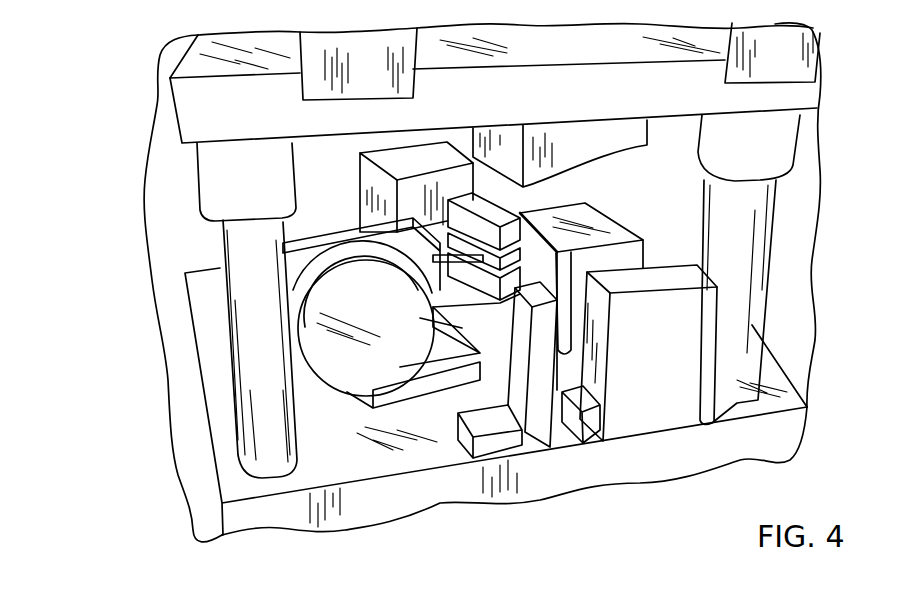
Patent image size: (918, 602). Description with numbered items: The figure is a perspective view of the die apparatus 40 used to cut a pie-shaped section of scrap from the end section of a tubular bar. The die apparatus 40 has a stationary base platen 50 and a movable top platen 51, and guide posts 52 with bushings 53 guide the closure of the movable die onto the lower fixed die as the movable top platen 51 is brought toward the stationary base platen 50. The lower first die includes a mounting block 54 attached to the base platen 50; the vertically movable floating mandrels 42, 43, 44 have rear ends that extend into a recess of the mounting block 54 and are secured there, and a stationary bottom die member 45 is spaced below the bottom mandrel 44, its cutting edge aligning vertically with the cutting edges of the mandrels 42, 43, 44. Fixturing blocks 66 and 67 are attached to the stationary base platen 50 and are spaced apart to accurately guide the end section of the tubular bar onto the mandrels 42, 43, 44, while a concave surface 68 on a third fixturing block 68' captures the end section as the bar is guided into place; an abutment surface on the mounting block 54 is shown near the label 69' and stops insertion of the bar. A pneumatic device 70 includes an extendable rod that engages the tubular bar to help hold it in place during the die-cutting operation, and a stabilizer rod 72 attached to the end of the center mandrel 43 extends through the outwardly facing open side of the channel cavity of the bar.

The die apparatus 40 is at (132, 272).
The mandrel 42 is at (478, 195).
The center mandrel 43 is at (383, 230).
The bottom mandrel 44 is at (440, 262).
The stationary bottom die member 45 is at (445, 300).
The stationary base platen 50 is at (228, 483).
The movable top platen 51 is at (182, 106).
The guide post 52 is at (230, 352).
The bushing 53 is at (207, 175).
The mounting block 54 is at (451, 147).
The fixturing block 66 is at (653, 413).
The fixturing block 67 is at (535, 435).
The concave surface 68 is at (594, 316).
The third fixturing block 68' is at (606, 258).
The block 69' is at (389, 187).
The pneumatic device 70 is at (350, 373).
The stabilizer rod 72 is at (393, 255).